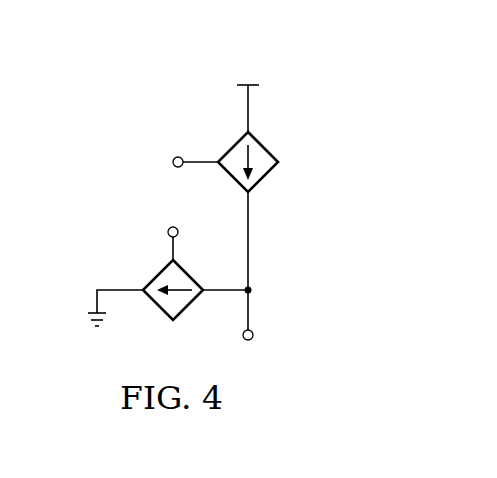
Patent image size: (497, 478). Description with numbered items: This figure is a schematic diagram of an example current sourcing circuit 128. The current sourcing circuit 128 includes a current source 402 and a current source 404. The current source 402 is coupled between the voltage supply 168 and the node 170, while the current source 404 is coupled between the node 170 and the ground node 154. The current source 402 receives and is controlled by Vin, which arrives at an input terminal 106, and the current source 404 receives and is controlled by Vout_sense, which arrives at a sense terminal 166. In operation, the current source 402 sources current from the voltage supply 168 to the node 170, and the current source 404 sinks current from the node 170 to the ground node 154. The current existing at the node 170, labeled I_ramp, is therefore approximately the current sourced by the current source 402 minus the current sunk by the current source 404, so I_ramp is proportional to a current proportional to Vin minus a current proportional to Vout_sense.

The current sourcing circuit 128 is at (191, 61).
The voltage supply 168 is at (253, 84).
The current source 402 is at (290, 128).
The input voltage node Vin 106 is at (176, 158).
The output voltage sense node Vout_sense 166 is at (168, 233).
The current source 404 is at (157, 307).
The ground node 154 is at (87, 315).
The node 170 is at (253, 337).